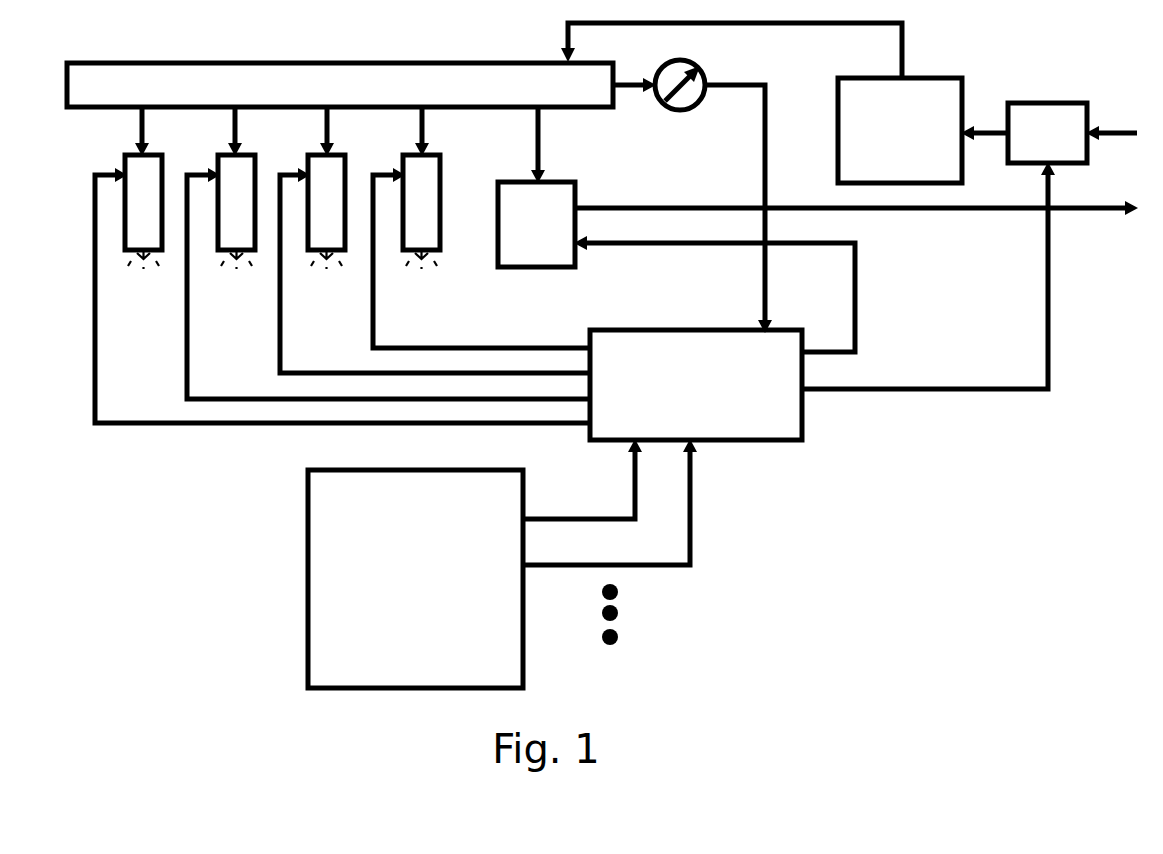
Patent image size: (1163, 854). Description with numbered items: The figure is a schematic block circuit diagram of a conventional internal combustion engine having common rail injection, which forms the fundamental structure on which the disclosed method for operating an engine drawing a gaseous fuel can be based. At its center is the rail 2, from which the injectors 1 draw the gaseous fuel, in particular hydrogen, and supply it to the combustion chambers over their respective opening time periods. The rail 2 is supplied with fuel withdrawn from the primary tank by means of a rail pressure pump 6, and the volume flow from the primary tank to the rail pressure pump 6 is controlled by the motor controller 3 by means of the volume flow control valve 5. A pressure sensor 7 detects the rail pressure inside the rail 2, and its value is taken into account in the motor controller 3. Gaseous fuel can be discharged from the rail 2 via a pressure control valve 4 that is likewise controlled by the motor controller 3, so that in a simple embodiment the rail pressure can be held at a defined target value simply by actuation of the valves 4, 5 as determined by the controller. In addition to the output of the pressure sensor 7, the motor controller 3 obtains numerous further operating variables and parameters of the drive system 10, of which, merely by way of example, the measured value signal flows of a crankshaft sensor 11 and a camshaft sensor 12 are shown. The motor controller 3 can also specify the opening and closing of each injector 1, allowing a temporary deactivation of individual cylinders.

The injector 1 is at (282, 212).
The rail 2 is at (340, 85).
The motor controller 3 is at (696, 385).
The pressure control valve 4 is at (536, 224).
The volume flow control valve 5 is at (1047, 133).
The rail pressure pump 6 is at (900, 130).
The pressure sensor 7 is at (659, 99).
The drive system 10 is at (415, 579).
The crankshaft sensor 11 is at (582, 479).
The camshaft sensor 12 is at (610, 502).